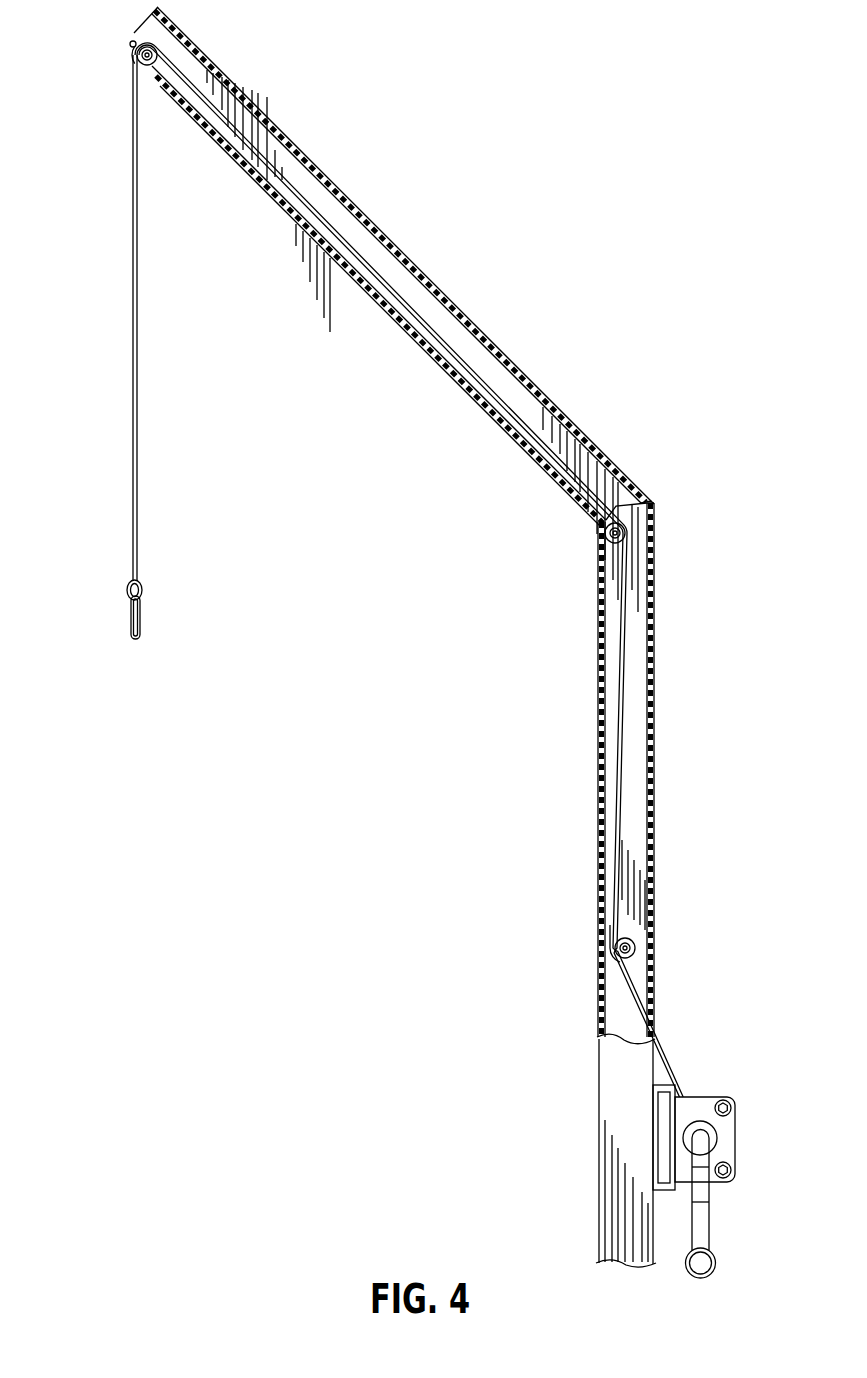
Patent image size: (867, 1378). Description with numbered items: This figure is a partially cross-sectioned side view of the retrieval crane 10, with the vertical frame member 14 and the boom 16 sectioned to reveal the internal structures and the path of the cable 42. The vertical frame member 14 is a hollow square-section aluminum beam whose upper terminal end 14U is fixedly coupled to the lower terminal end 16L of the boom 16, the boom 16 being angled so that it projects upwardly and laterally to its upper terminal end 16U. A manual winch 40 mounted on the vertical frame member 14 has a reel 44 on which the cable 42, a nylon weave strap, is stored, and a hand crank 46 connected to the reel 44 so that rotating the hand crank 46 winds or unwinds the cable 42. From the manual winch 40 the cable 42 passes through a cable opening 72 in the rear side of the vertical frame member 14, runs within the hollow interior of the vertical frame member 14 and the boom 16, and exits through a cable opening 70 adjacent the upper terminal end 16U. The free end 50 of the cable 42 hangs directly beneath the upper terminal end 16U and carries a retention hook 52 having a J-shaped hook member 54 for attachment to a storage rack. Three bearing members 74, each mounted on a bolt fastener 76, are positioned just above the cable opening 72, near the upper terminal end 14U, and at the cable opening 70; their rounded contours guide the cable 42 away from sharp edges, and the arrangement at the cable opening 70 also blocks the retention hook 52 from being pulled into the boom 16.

The retrieval crane 10 is at (424, 639).
The vertical frame member 14 is at (660, 885).
The upper terminal end of the vertical frame member 14U is at (655, 538).
The boom 16 is at (420, 306).
The upper terminal end of the boom 16U is at (168, 14).
The lower terminal end of the boom 16L is at (645, 498).
The manual winch 40 is at (722, 1167).
The cable 42 is at (368, 258).
The reel 44 is at (718, 1136).
The hand crank 46 is at (712, 1217).
The free end of the cable 50 is at (131, 571).
The retention hook 52 is at (161, 638).
The J-shaped hook member 54 is at (140, 612).
The cable opening in the boom 70 is at (126, 50).
The cable opening in the vertical frame member 72 is at (654, 1005).
The bearing member 74 is at (149, 67).
The bolt fastener 76 is at (128, 43).